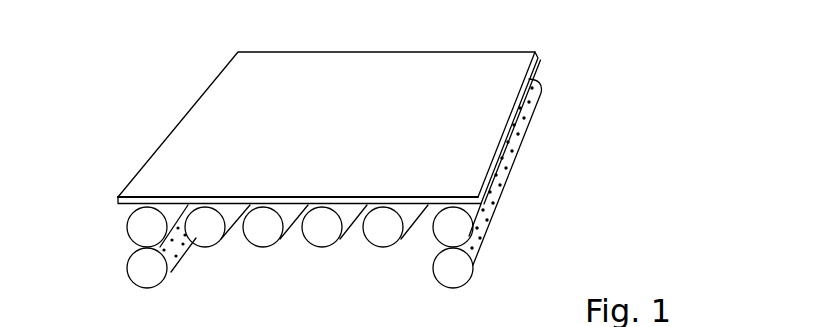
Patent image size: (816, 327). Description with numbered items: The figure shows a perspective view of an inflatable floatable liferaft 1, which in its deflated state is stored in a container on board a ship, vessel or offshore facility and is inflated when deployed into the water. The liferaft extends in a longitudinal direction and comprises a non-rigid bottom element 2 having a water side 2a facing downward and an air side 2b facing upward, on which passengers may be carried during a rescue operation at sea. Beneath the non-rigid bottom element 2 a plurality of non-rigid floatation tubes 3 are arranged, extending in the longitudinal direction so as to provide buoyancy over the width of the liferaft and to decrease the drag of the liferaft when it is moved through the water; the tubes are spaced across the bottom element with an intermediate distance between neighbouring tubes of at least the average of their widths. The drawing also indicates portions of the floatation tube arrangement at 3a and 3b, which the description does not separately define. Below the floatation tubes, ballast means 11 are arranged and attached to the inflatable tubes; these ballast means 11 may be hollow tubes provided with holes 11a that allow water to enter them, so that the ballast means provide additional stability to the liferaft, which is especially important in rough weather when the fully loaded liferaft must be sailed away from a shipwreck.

The inflatable floatable liferaft 1 is at (151, 89).
The non-rigid bottom element 2 is at (150, 188).
The water side 2a is at (130, 213).
The air side 2b is at (197, 133).
The non-rigid floatation tubes 3 is at (147, 229).
The lower belt run 3a is at (455, 230).
The belt end section 3b is at (536, 68).
The ballast means 11 is at (160, 272).
The holes 11a is at (502, 196).